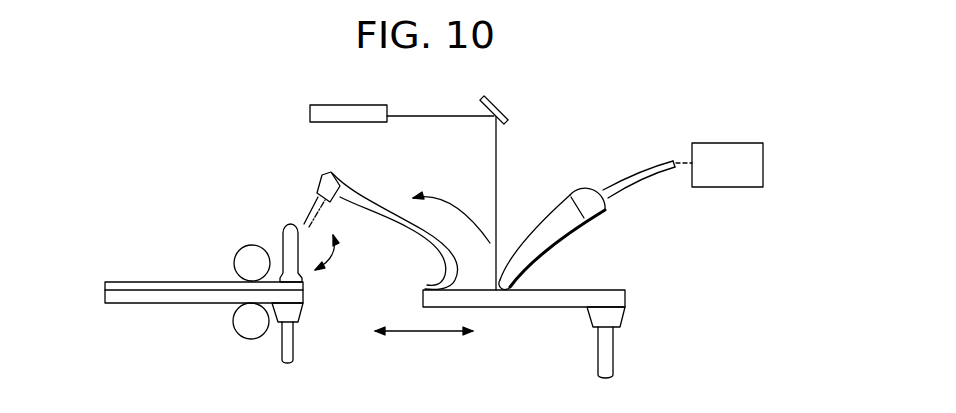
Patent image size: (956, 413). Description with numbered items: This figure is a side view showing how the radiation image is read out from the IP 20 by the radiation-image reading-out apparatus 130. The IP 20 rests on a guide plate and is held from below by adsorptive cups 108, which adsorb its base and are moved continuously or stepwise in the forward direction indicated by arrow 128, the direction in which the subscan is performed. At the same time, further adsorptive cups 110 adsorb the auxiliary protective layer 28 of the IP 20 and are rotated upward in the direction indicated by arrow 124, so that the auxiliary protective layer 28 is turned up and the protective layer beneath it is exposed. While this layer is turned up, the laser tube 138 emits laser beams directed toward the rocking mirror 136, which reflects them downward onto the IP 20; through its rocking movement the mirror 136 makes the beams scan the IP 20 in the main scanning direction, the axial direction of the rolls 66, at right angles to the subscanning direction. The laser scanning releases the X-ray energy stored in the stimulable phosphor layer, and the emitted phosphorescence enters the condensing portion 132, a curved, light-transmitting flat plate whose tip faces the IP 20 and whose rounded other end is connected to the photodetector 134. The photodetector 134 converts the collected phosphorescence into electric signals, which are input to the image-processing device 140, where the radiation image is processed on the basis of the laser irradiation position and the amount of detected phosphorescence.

The IP (radiation image converting panel) 20 is at (172, 307).
The auxiliary protective layer 28 is at (188, 283).
The rolls 66 is at (243, 247).
The adsorptive cups 108 is at (290, 312).
The adsorptive cups 110 is at (323, 189).
The arrow 124 is at (336, 254).
The arrow 128 is at (418, 332).
The radiation-image reading-out apparatus 130 is at (613, 122).
The condensing portion 132 is at (568, 212).
The photodetector 134 is at (595, 197).
The rocking mirror 136 is at (508, 117).
The laser tube 138 is at (318, 111).
The image-processing device 140 is at (728, 177).